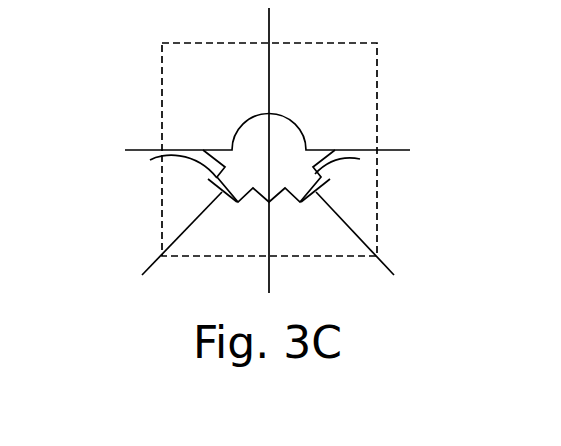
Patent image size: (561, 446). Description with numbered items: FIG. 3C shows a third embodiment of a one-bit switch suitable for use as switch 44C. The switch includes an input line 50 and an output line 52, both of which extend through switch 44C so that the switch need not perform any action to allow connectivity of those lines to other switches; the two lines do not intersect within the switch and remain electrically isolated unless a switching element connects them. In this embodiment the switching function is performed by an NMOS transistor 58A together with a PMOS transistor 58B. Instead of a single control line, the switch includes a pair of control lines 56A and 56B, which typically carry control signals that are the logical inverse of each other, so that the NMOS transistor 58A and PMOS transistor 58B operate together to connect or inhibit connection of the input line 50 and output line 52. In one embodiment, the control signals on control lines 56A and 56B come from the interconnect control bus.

The switch 44C is at (178, 43).
The output line 52 is at (270, 34).
The input line 50 is at (143, 149).
The NMOS transistor 58A is at (150, 160).
The PMOS transistor 58B is at (360, 159).
The control line 56A is at (148, 264).
The control line 56B is at (388, 266).